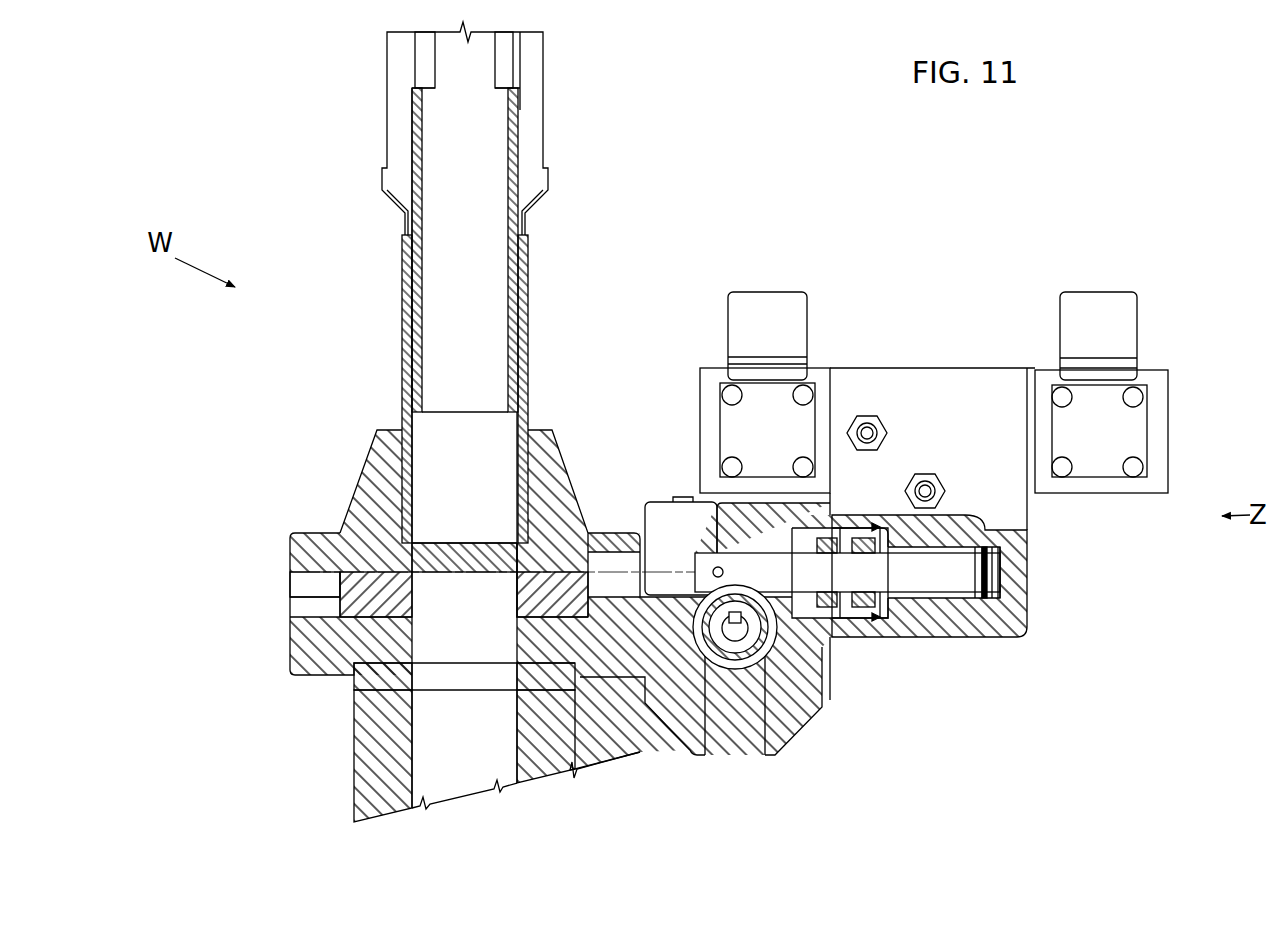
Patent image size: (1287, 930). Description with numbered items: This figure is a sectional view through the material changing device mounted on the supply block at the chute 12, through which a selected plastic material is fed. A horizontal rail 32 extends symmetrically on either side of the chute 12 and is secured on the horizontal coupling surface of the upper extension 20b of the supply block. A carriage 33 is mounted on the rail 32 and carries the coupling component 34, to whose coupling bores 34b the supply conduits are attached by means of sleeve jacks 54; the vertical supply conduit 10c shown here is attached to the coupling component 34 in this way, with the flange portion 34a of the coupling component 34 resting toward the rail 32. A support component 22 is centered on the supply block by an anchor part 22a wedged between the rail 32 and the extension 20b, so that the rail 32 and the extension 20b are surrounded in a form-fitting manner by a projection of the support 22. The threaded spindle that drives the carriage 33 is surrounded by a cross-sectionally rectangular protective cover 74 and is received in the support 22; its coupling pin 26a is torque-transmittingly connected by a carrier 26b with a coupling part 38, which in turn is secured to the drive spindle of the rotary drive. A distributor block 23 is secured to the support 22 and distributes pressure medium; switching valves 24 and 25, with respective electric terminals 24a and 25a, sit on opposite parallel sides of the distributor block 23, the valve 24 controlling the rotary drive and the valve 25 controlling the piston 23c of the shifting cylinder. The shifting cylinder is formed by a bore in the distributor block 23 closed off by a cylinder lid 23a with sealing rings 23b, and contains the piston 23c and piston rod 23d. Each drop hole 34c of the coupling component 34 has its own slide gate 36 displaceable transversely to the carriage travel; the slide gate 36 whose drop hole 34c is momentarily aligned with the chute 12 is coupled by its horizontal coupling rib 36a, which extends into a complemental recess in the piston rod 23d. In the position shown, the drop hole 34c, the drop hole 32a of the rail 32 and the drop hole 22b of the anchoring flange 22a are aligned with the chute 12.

The feed pipe 10c is at (543, 113).
The sleeve jack 54 is at (402, 370).
The coupling component 34 is at (357, 463).
The flange 34a is at (340, 541).
The coupling bore 34b is at (525, 548).
The drop hole 34c is at (480, 563).
The carriage 33 is at (330, 588).
The horizontal rail 32 is at (455, 600).
The drop hole 32a is at (475, 645).
The drop hole 22b is at (354, 688).
The chute 12 is at (475, 763).
The support component 22 is at (786, 757).
The anchor part 22a is at (572, 752).
The upper extension 20b is at (628, 757).
The slide gate 36 is at (567, 477).
The coupling rib 36a is at (712, 572).
The protective cover 74 is at (662, 500).
The coupling pin 26a is at (820, 707).
The carrier 26b is at (737, 612).
The coupling part 38 is at (738, 660).
The switching valve 25 is at (696, 380).
The electric terminal 25a is at (750, 318).
The switching valve 24 is at (1172, 395).
The electric terminal 24a is at (1105, 328).
The distributor block 23 is at (1010, 514).
The cylinder lid 23a is at (882, 603).
The sealing ring 23b is at (862, 607).
The piston 23c is at (1005, 580).
The piston rod 23d is at (1022, 630).